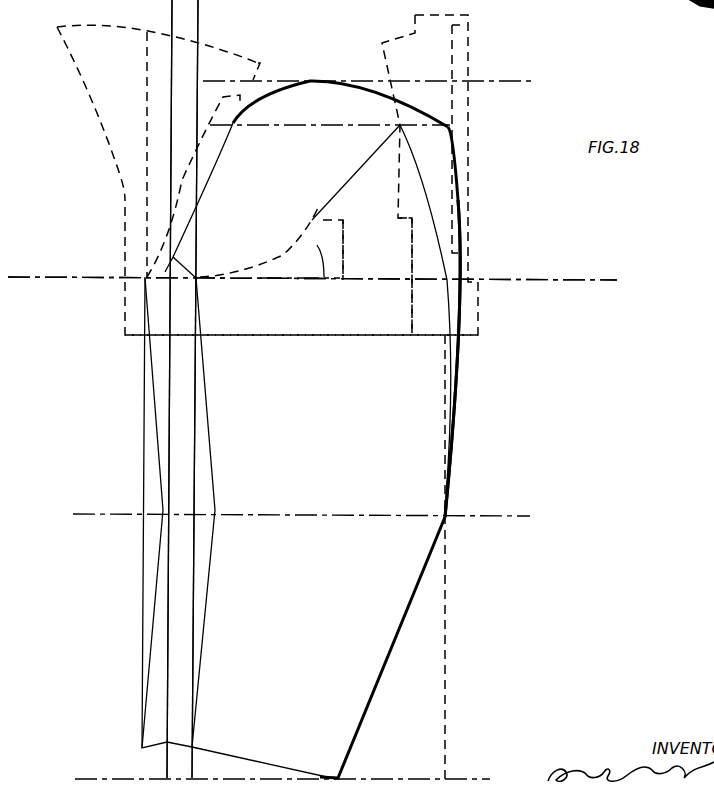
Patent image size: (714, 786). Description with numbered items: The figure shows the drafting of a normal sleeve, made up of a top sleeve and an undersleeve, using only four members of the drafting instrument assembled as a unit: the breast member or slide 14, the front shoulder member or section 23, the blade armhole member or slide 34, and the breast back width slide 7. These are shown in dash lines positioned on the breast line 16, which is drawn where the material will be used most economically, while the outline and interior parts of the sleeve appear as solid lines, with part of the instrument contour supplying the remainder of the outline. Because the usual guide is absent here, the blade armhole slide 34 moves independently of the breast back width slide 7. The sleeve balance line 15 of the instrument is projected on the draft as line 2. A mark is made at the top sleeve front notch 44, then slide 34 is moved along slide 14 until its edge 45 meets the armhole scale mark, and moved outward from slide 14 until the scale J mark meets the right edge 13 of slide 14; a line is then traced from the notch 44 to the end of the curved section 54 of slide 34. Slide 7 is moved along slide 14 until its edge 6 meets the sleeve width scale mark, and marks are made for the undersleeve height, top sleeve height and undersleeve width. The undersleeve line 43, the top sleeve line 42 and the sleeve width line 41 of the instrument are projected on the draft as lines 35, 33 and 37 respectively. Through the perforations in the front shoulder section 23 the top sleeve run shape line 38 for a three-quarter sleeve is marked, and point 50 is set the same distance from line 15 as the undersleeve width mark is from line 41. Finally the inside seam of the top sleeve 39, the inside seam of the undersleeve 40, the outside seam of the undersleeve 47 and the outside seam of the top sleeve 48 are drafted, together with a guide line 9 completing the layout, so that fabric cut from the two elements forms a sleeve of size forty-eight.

The projected sleeve balance line 2 is at (170, 427).
The edge of breast back width slide 6 is at (410, 317).
The breast back width slide 7 is at (402, 65).
The dashed guide line 9 is at (450, 285).
The right edge of breast slide 13 is at (297, 283).
The breast member or slide 14 is at (318, 312).
The sleeve balance line 15 is at (172, 50).
The breast line 16 is at (23, 275).
The front shoulder member or section 23 is at (133, 122).
The projected top sleeve line 33 is at (142, 423).
The blade armhole member or slide 34 is at (303, 262).
The projected undersleeve line 35 is at (198, 227).
The projected sleeve width line 37 is at (447, 392).
The top sleeve run shape line for three-quarter sleeve 38 is at (163, 268).
The inside seam of top sleeve 39 is at (162, 542).
The inside seam of undersleeve 40 is at (215, 510).
The sleeve width line 41 is at (452, 145).
The top sleeve line 42 is at (147, 110).
The undersleeve line 43 is at (192, 340).
The top sleeve front notch 44 is at (177, 257).
The edge of blade armhole slide 45 is at (343, 237).
The outside seam of undersleeve 47 is at (433, 222).
The outside seam of top sleeve 48 is at (467, 347).
The point 50 is at (233, 123).
The curved section of blade armhole slide 54 is at (250, 272).